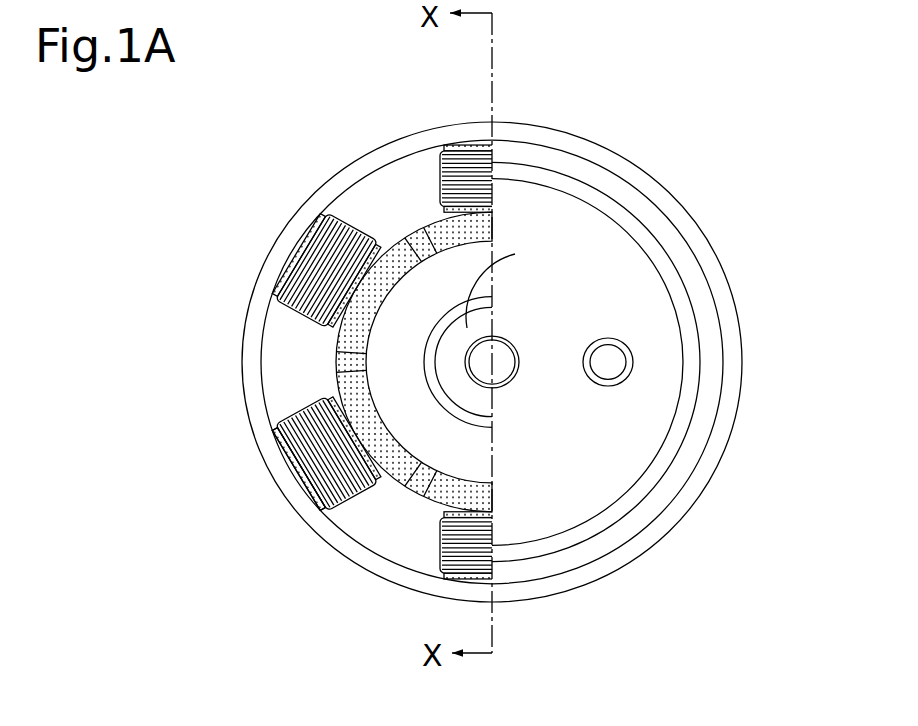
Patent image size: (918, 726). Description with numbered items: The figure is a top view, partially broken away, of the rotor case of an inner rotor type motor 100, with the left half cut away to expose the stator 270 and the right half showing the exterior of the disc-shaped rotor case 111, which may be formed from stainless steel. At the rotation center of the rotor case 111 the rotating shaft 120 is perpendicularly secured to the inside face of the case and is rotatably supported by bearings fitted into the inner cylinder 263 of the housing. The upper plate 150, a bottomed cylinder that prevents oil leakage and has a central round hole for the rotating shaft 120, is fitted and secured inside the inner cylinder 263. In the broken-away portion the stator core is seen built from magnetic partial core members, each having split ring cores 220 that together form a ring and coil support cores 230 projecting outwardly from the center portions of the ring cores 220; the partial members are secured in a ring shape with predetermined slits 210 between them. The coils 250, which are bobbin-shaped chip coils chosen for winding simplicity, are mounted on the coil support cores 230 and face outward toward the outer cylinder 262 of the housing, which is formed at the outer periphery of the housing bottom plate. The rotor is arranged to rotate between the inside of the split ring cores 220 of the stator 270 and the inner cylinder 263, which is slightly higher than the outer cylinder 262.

The motor 100 is at (606, 600).
The rotor case 111 is at (631, 437).
The rotating shaft 120 is at (504, 356).
The upper plate 150 is at (467, 326).
The slits 210 is at (410, 496).
The split ring cores 220 is at (392, 483).
The coil support cores 230 is at (305, 490).
The coils 250 is at (442, 146).
The outer cylinder 262 is at (252, 348).
The inner cylinder 263 is at (427, 370).
The stator 270 is at (419, 206).